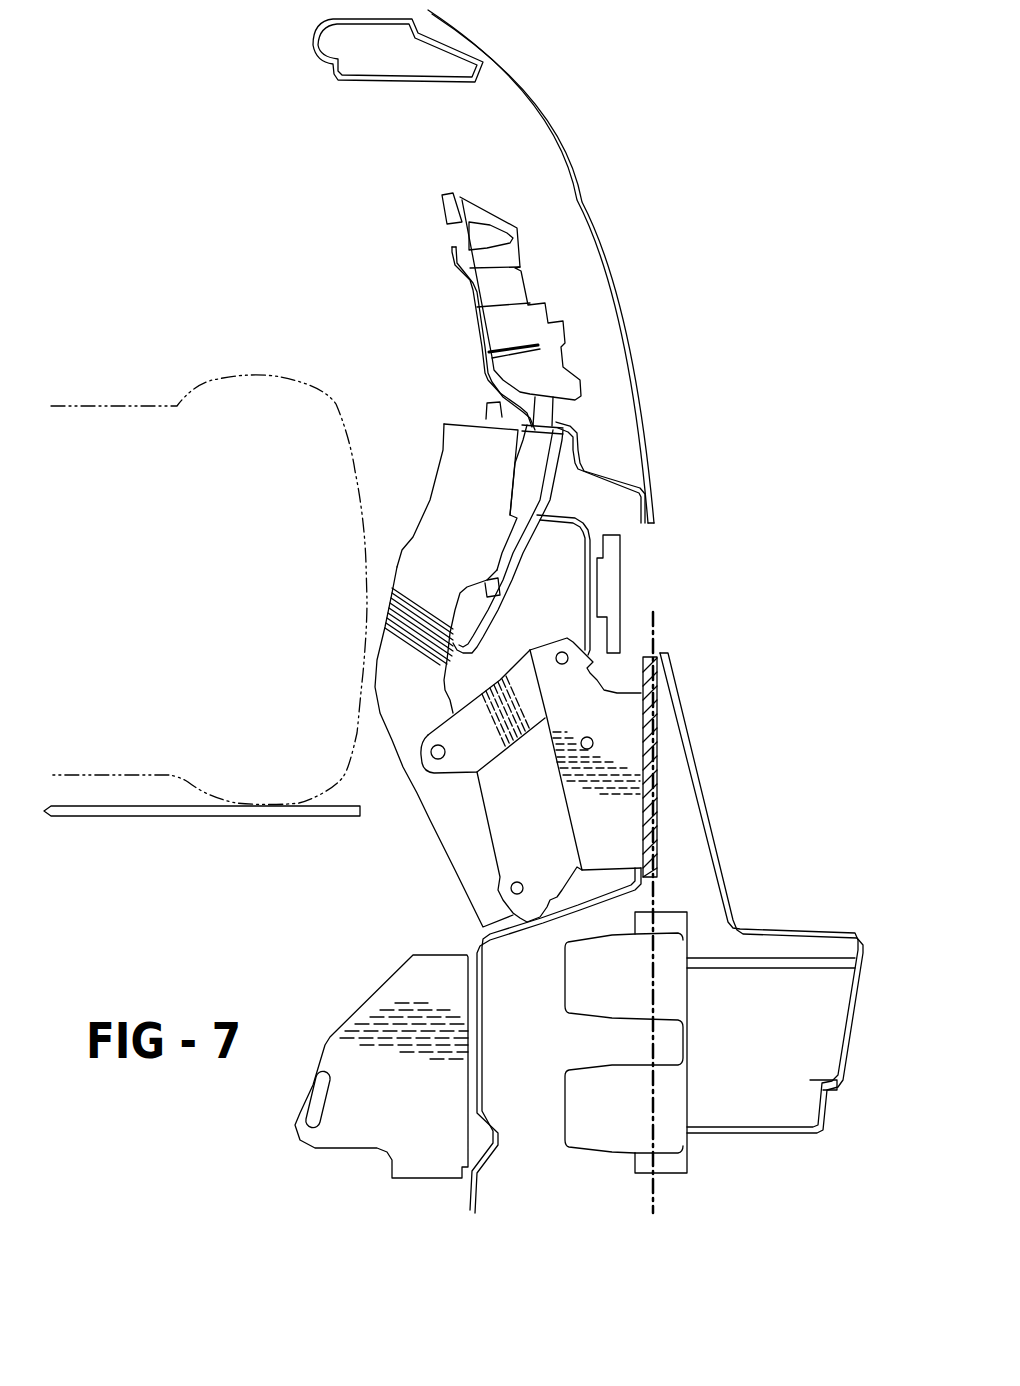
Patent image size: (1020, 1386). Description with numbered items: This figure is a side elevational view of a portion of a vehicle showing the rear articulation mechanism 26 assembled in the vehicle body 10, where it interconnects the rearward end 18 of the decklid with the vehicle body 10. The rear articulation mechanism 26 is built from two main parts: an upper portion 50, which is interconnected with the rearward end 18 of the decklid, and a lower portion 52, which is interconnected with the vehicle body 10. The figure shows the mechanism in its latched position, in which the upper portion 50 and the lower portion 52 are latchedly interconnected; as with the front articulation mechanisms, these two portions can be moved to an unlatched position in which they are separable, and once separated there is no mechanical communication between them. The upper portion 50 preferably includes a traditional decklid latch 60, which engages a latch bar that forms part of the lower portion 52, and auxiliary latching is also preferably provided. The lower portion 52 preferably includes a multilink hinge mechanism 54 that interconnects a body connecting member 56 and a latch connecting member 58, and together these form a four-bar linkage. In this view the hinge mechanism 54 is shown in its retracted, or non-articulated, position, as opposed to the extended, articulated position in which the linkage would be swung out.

The vehicle body 10 is at (660, 893).
The rearward end 18 is at (568, 237).
The rear articulation mechanism 26 is at (365, 599).
The upper portion 50 is at (470, 262).
The lower portion 52 is at (416, 815).
The multilink hinge mechanism 54 is at (523, 630).
The body connecting member 56 is at (648, 783).
The latch connecting member 58 is at (412, 537).
The decklid latch 60 is at (560, 417).